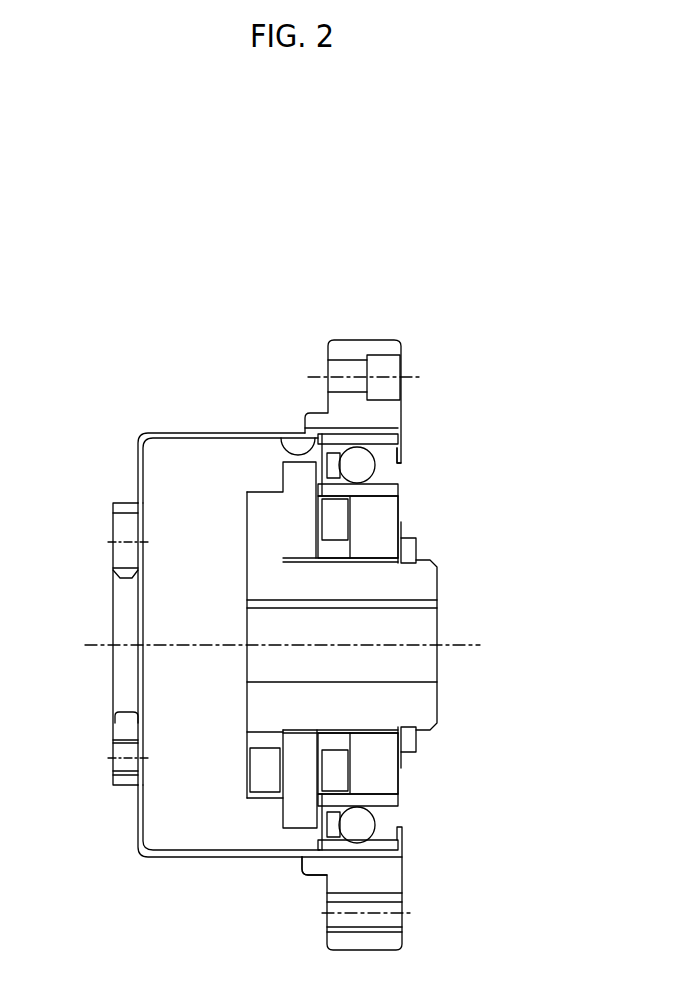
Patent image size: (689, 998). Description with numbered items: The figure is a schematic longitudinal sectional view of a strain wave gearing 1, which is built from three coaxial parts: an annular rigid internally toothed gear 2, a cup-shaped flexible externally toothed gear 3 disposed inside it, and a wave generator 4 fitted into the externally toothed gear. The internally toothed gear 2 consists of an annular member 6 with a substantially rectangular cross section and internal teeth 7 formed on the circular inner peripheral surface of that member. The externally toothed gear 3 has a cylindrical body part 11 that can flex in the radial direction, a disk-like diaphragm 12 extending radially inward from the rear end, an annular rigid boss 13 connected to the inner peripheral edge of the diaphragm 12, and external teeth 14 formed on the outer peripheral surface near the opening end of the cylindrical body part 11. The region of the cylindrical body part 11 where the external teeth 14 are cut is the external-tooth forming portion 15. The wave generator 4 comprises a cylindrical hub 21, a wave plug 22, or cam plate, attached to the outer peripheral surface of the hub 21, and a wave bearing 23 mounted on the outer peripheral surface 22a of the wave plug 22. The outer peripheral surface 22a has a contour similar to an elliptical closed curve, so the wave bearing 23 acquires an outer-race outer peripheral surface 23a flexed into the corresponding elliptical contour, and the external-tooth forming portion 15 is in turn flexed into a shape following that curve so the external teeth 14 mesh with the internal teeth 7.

The strain wave gearing 1 is at (426, 340).
The internally toothed gear 2 is at (410, 408).
The externally toothed gear 3 is at (414, 434).
The wave generator 4 is at (410, 511).
The annular member 6 is at (328, 354).
The internal teeth 7 is at (282, 437).
The cylindrical body part 11 is at (227, 858).
The diaphragm 12 is at (137, 805).
The boss 13 is at (125, 727).
The external teeth 14 is at (358, 858).
The external-tooth forming portion 15 is at (323, 863).
The hub 21 is at (420, 582).
The wave plug 22 is at (372, 785).
The outer peripheral surface 22a is at (382, 800).
The wave bearing 23 is at (385, 822).
The outer-race outer peripheral surface 23a is at (392, 860).